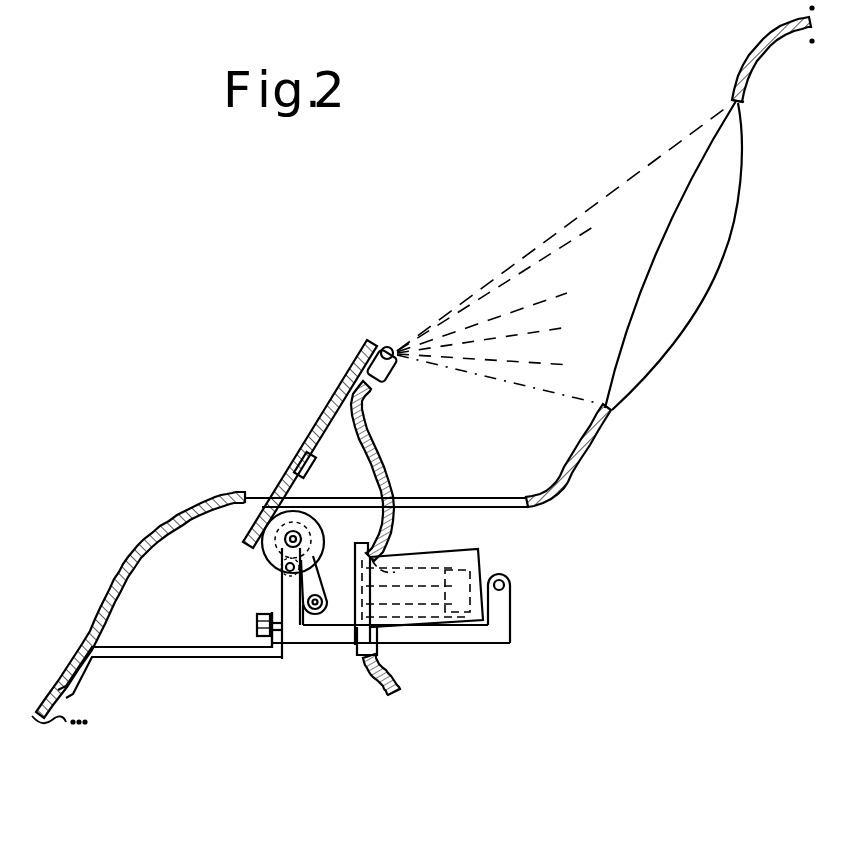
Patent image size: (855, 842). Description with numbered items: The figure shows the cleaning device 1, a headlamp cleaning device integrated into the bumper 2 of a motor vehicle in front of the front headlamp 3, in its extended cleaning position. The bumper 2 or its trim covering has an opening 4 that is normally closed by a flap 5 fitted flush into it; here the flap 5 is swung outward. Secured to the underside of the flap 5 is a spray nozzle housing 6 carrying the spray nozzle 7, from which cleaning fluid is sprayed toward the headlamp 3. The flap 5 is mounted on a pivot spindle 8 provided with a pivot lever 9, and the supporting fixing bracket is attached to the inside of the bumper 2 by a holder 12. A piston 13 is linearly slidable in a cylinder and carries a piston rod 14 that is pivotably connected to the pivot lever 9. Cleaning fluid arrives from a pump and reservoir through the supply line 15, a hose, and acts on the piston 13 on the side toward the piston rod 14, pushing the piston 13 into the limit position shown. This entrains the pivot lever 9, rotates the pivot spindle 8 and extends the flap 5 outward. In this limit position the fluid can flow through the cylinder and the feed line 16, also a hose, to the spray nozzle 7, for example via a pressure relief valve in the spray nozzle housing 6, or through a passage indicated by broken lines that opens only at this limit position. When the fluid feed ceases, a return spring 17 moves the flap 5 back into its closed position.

The cleaning device 1 is at (274, 690).
The bumper 2 is at (160, 543).
The front headlamp 3 is at (648, 287).
The opening 4 is at (440, 492).
The flap 5 is at (307, 437).
The spray nozzle housing 6 is at (382, 375).
The spray nozzle 7 is at (562, 255).
The pivot spindle 8 is at (274, 565).
The pivot lever 9 is at (300, 588).
The holder 12 is at (182, 656).
The piston 13 is at (465, 572).
The piston rod 14 is at (341, 603).
The supply line 15 is at (399, 681).
The feed line 16 is at (393, 527).
The return spring 17 is at (285, 482).